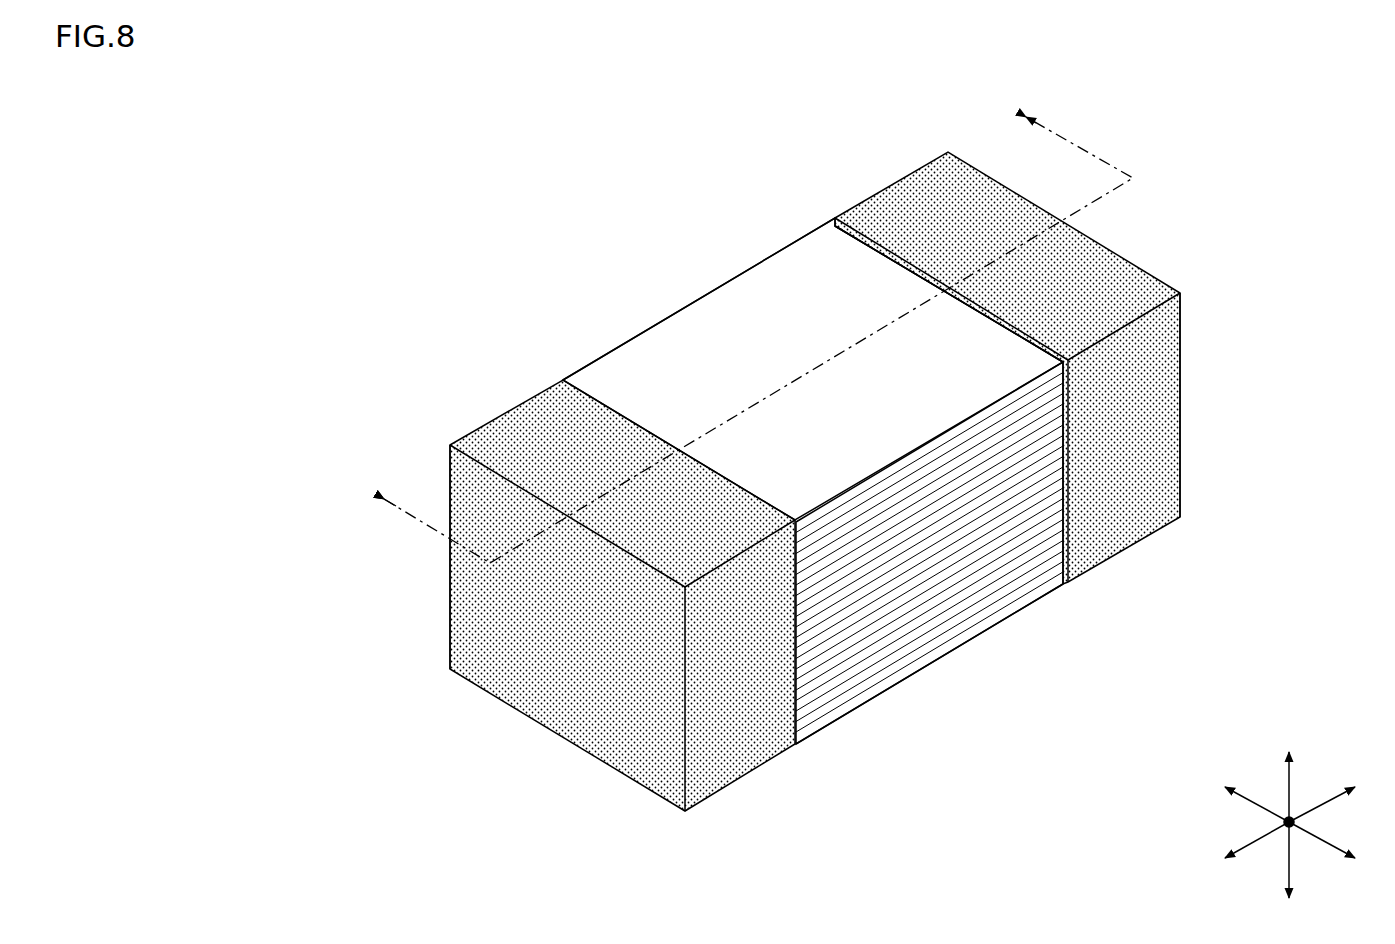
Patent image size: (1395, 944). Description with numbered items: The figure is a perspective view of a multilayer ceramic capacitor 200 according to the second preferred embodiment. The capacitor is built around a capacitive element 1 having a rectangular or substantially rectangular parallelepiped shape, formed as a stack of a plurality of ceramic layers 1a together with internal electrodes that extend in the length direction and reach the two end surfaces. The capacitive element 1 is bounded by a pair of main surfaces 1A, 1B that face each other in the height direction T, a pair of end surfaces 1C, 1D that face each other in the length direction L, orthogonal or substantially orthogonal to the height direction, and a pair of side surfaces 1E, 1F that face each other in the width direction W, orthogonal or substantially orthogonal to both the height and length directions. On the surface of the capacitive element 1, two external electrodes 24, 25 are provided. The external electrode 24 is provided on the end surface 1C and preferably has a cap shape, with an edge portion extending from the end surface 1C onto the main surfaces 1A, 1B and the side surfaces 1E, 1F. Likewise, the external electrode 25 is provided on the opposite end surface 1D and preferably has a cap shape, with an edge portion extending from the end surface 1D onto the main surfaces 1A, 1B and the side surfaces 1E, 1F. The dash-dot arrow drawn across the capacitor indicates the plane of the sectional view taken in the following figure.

The multilayer ceramic capacitor 200 is at (170, 100).
The capacitive element 1 is at (830, 290).
The ceramic layers 1a is at (1043, 542).
The main surface 1A is at (850, 728).
The main surface 1B is at (667, 393).
The end surface 1C is at (550, 605).
The end surface 1D is at (1143, 230).
The side surface 1E is at (950, 567).
The side surface 1F is at (675, 288).
The external electrode 24 is at (530, 425).
The external electrode 25 is at (965, 237).